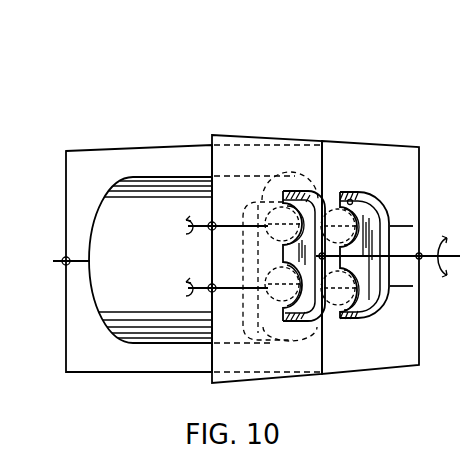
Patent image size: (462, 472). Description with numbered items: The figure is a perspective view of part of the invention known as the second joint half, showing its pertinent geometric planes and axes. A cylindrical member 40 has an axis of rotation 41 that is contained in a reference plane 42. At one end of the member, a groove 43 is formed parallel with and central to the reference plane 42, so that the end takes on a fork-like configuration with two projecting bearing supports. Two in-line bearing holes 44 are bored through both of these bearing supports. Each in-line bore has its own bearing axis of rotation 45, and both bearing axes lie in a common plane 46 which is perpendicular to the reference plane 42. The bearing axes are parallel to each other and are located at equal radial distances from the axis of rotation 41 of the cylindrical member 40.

The cylindrical member 40 is at (178, 176).
The axis of rotation 41 is at (70, 259).
The reference plane 42 is at (138, 150).
The groove 43 is at (338, 192).
The in-line bearing holes 44 is at (375, 199).
The bearing axis of rotation 45 is at (228, 225).
The common plane 46 is at (419, 147).